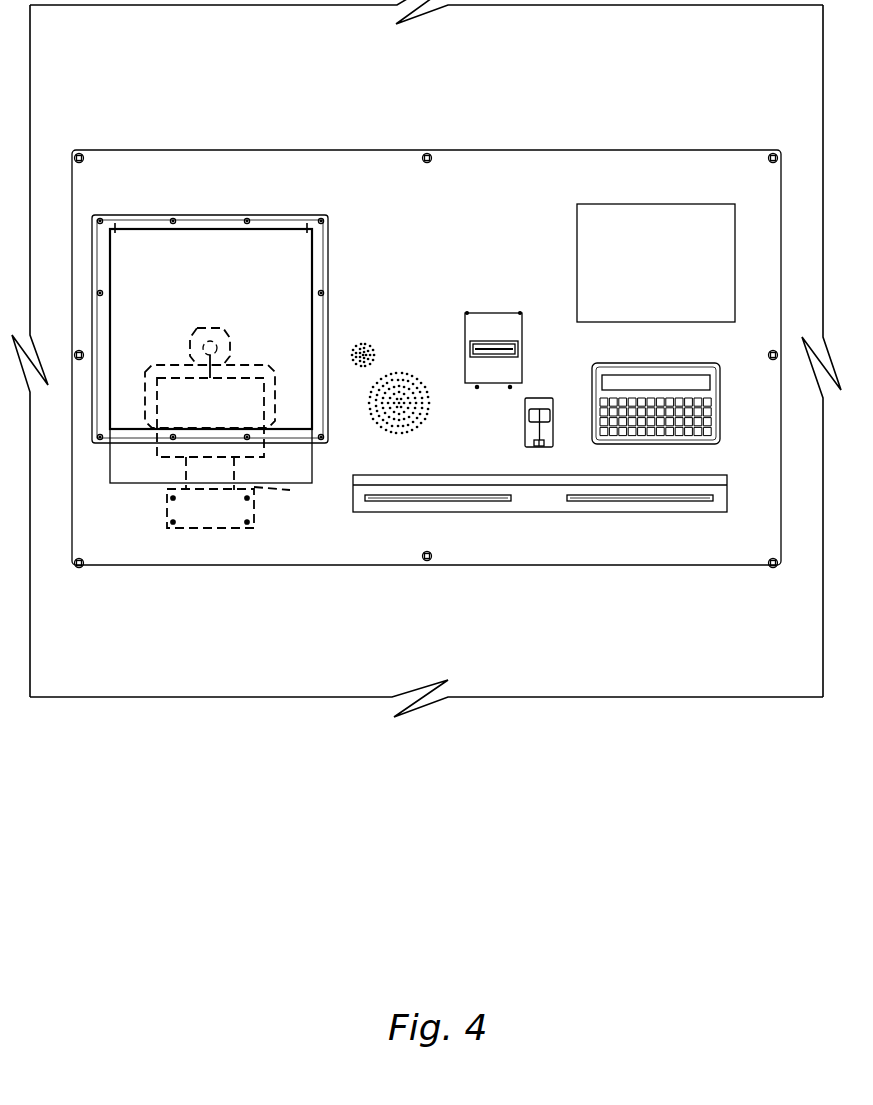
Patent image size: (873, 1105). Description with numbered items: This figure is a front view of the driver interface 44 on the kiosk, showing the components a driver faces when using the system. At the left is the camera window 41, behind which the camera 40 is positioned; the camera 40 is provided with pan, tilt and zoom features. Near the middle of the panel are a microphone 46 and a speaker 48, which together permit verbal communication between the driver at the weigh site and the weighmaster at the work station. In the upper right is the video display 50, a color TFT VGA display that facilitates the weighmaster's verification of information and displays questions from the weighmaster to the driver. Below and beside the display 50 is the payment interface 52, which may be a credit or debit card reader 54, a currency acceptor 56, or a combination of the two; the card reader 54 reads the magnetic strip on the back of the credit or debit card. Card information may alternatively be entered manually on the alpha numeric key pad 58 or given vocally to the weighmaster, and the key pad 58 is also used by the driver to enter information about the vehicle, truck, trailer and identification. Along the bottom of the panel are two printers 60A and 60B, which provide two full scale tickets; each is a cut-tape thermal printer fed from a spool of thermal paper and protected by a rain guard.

The driver interface 44 is at (586, 104).
The camera window 41 is at (183, 243).
The camera 40 is at (247, 388).
The microphone 46 is at (378, 342).
The speaker 48 is at (402, 378).
The currency acceptor 56 is at (493, 313).
The video display 50 is at (662, 268).
The payment interface 52 is at (573, 351).
The credit or debit card reader 54 is at (530, 428).
The alpha numeric key pad 58 is at (718, 386).
The printer 60A is at (410, 505).
The printer 60B is at (625, 505).